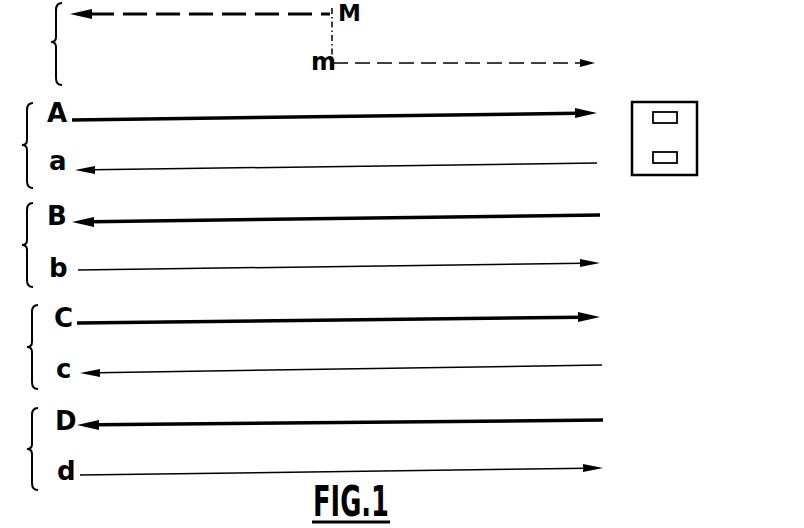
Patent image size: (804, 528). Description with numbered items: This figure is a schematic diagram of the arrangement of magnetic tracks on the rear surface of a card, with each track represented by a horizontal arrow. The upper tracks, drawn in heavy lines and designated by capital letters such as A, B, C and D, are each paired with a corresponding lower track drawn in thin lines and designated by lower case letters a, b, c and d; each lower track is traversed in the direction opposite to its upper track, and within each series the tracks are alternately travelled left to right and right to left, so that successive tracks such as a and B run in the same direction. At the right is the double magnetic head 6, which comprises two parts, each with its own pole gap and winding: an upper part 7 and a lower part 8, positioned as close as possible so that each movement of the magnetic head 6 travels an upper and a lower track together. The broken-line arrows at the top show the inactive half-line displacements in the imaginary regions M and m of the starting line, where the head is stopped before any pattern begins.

The double magnetic head 6 is at (642, 133).
The upper part 7 is at (665, 112).
The lower part 8 is at (662, 164).